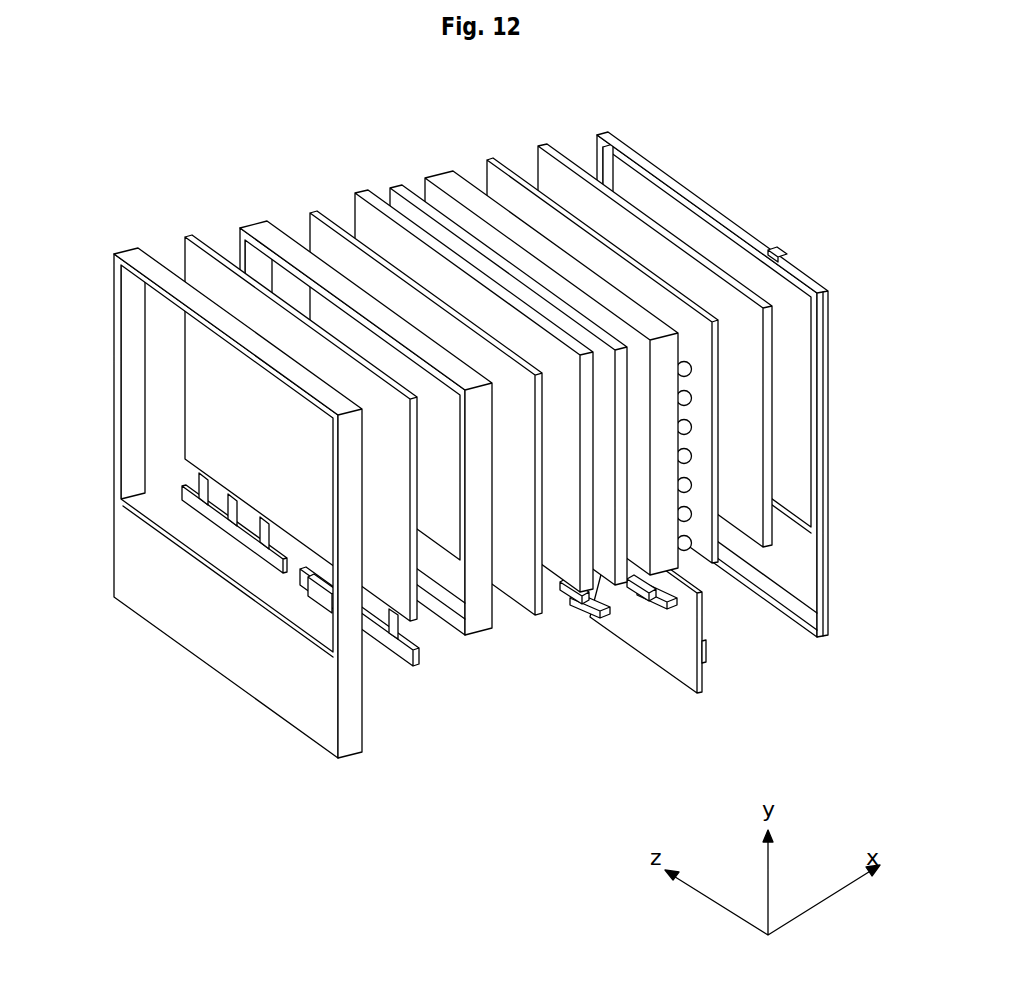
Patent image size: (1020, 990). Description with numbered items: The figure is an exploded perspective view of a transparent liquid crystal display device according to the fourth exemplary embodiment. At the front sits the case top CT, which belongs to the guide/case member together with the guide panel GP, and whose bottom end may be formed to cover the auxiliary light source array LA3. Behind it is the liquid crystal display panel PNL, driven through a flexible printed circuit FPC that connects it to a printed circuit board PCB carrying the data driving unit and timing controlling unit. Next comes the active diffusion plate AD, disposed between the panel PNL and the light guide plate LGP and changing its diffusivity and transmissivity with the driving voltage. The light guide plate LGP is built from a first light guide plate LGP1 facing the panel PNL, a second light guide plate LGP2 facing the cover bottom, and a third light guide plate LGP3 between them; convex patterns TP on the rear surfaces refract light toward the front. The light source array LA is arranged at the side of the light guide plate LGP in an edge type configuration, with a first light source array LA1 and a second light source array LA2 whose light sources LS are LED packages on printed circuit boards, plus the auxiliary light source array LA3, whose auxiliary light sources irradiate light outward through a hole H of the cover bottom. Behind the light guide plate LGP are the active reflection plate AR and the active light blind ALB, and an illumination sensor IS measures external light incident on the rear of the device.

The case top CT is at (128, 458).
The liquid crystal display panel PNL is at (196, 236).
The guide panel GP is at (478, 629).
The active diffusion plate AD is at (543, 611).
The light guide plate LGP is at (481, 328).
The first light guide plate LGP1 is at (442, 357).
The second light guide plate LGP2 is at (410, 190).
The third light guide plate LGP3 is at (445, 180).
The active reflection plate AR is at (713, 435).
The active light blind ALB is at (752, 457).
The illumination sensor IS is at (786, 251).
The hole H is at (796, 586).
The convex patterns TP is at (687, 553).
The light sources LS is at (679, 584).
The light source array LA is at (662, 662).
The first light source array LA1 is at (586, 661).
The second light source array LA2 is at (662, 602).
The auxiliary light source array LA3 is at (700, 675).
The flexible printed circuit FPC is at (405, 620).
The printed circuit board PCB is at (400, 649).